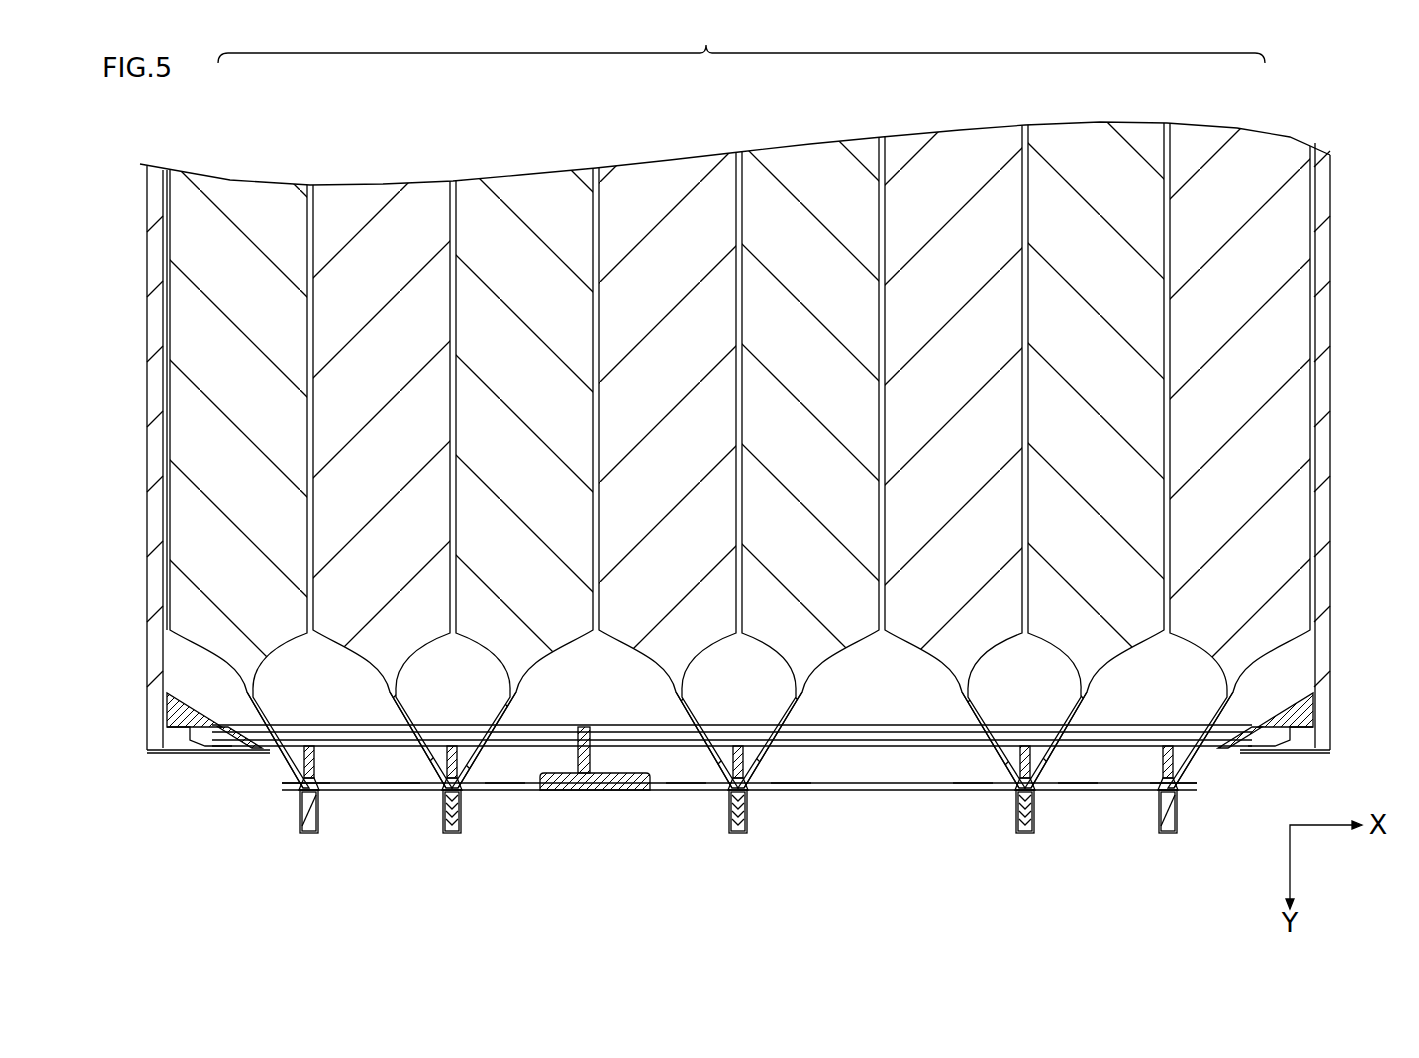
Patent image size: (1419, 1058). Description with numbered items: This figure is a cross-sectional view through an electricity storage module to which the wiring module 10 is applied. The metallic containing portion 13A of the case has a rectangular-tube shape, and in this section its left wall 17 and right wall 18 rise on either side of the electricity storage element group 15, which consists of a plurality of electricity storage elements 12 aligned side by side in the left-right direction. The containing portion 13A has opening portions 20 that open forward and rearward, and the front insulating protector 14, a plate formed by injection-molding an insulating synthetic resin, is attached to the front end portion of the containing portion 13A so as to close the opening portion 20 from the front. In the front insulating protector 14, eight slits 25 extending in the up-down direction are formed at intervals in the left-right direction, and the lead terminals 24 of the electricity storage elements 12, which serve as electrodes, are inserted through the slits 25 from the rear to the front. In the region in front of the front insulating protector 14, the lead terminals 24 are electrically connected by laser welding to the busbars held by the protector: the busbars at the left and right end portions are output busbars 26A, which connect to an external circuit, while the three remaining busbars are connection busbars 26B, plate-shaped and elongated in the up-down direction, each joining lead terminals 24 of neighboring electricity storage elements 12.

The wiring module 10 is at (862, 806).
The electricity storage element 12 is at (235, 193).
The containing portion 13A is at (1323, 386).
The front insulating protector 14 is at (607, 790).
The electricity storage element group 15 is at (741, 39).
The left wall 17 is at (1322, 267).
The right wall 18 is at (156, 264).
The opening portion 20 is at (167, 668).
The lead terminal 24 is at (284, 790).
The slit 25 is at (317, 766).
The output busbar 26A is at (309, 834).
The connection busbar 26B is at (457, 834).